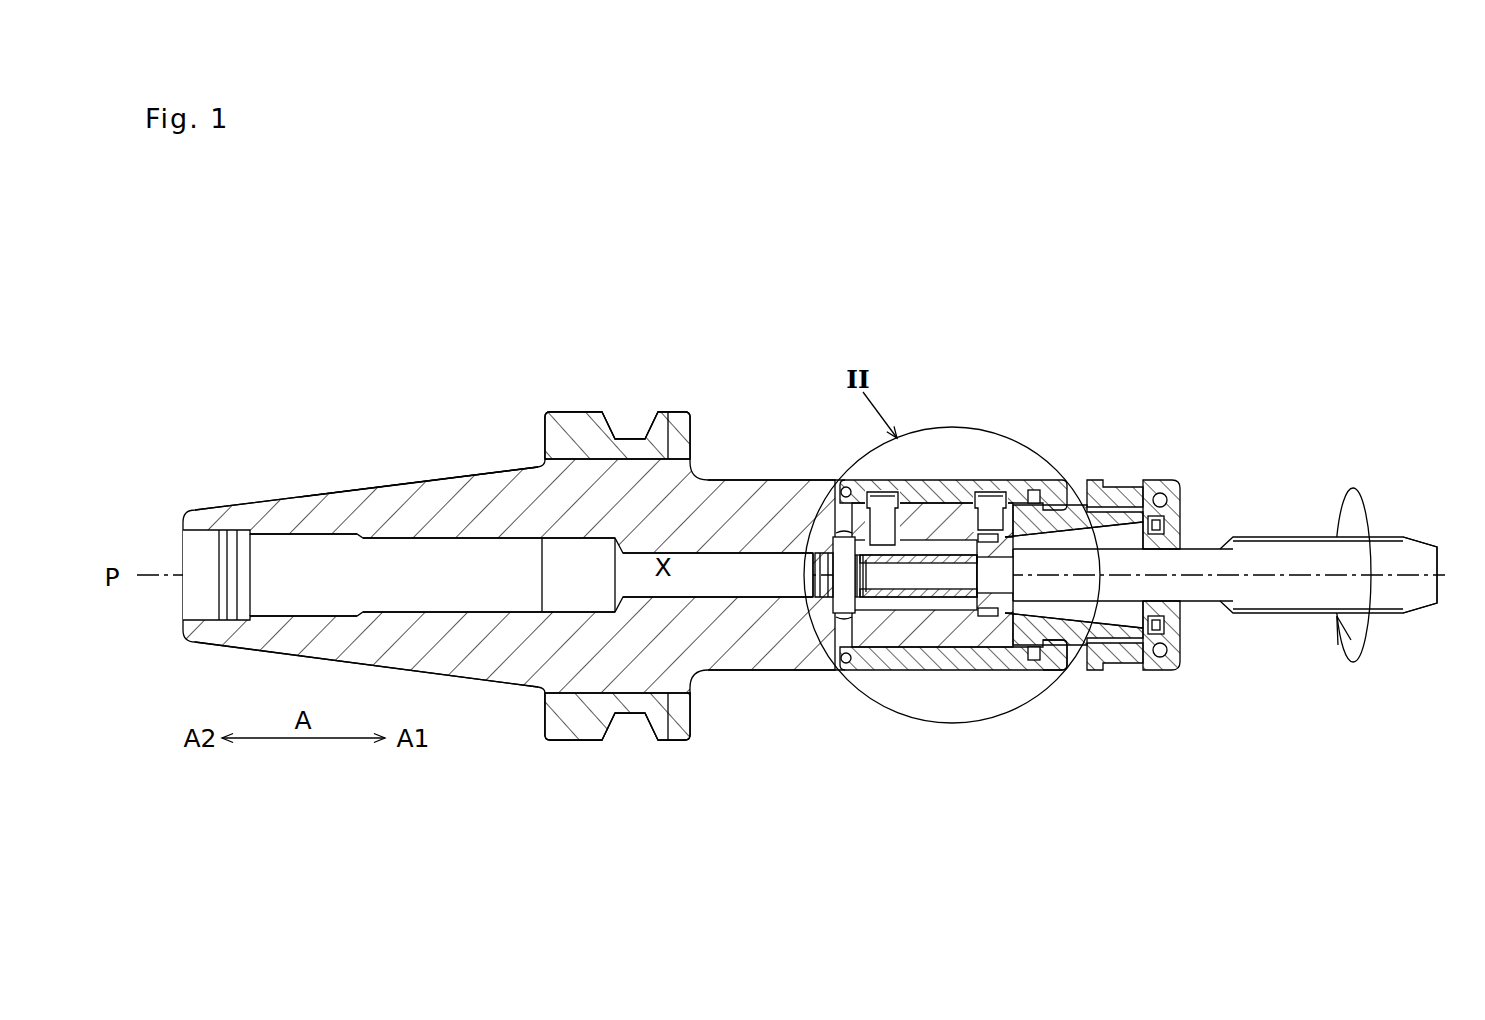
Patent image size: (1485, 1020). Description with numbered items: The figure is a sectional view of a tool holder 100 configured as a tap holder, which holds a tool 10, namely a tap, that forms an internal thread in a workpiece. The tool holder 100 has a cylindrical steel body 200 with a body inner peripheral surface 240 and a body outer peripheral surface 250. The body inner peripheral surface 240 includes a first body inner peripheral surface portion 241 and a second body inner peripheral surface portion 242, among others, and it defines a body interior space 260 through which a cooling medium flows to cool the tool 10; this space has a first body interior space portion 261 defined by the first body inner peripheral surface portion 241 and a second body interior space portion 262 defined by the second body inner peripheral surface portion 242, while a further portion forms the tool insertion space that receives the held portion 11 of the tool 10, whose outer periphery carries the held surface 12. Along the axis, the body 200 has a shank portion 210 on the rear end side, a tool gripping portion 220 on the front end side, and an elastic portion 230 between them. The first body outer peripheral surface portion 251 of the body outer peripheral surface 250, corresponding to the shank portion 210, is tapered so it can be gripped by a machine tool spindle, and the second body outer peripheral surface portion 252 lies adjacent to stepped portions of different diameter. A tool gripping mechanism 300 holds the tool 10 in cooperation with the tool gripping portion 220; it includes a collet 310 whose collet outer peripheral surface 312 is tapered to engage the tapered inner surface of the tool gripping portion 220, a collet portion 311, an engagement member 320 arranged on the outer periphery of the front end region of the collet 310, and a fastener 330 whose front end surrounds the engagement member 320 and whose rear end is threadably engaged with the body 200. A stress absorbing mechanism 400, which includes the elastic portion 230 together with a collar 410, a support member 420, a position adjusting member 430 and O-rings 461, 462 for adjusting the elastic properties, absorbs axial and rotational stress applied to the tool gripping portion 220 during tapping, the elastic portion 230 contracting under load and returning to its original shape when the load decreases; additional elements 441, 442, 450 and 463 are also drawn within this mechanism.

The tool 10 is at (1317, 551).
The held portion 11 is at (1210, 565).
The held surface 12 is at (1195, 549).
The tool holder 100 is at (333, 370).
The body 200 is at (505, 395).
The shank portion 210 is at (318, 490).
The tool gripping portion 220 is at (1072, 507).
The elastic portion 230 is at (955, 478).
The body inner peripheral surface 240 is at (387, 542).
The first body inner peripheral surface portion 241 is at (517, 544).
The second body inner peripheral surface portion 242 is at (780, 553).
The body outer peripheral surface 250 is at (460, 475).
The first body outer peripheral surface portion 251 is at (370, 486).
The second body outer peripheral surface portion 252 is at (747, 482).
The body interior space 260 is at (250, 597).
The first body interior space portion 261 is at (465, 597).
The second body interior space portion 262 is at (652, 566).
The tool gripping mechanism 300 is at (1138, 556).
The collet 310 is at (1180, 612).
The collet shaft portion 311 is at (1110, 550).
The collet outer peripheral surface 312 is at (1108, 525).
The engagement member 320 is at (1180, 650).
The fastener 330 is at (1117, 665).
The stress absorbing mechanism 400 is at (932, 453).
The collar 410 is at (957, 663).
The support member 420 is at (897, 607).
The position adjusting member 430 is at (923, 590).
The first bolt 441 is at (989, 512).
The second bolt 442 is at (882, 515).
The cover 450 is at (1000, 667).
The O-ring 461 is at (843, 488).
The O-ring 462 is at (835, 607).
The second seal 463 is at (977, 542).